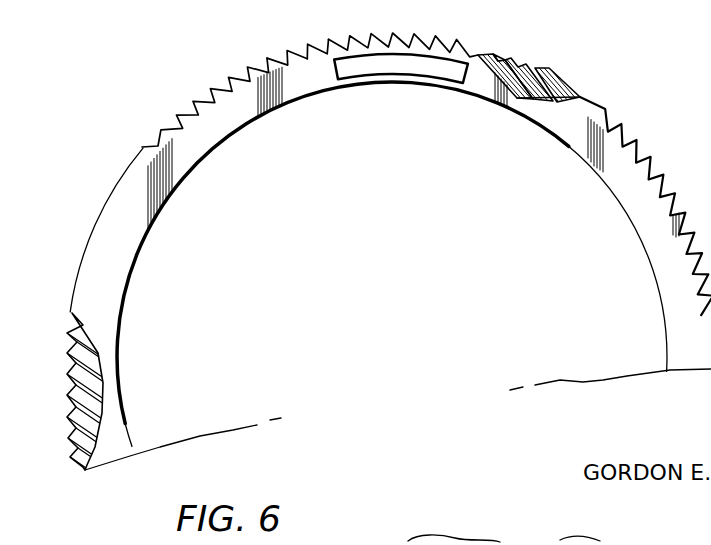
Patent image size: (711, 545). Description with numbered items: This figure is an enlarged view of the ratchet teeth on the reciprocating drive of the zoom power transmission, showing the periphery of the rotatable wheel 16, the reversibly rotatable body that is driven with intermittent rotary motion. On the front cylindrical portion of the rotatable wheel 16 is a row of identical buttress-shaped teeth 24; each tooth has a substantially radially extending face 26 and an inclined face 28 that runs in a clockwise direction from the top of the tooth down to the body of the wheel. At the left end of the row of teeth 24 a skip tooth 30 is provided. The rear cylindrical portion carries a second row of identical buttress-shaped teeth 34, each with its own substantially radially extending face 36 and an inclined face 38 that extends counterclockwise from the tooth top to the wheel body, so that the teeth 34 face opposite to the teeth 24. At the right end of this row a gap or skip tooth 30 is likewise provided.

The rotatable wheel 16 is at (593, 180).
The buttress-shaped teeth 24 is at (240, 77).
The radially extending face 26 is at (293, 48).
The inclined face 28 is at (308, 42).
The skip tooth 30 is at (159, 143).
The buttress-shaped teeth 34 is at (478, 54).
The radially extending face 36 is at (516, 61).
The inclined face 38 is at (499, 58).